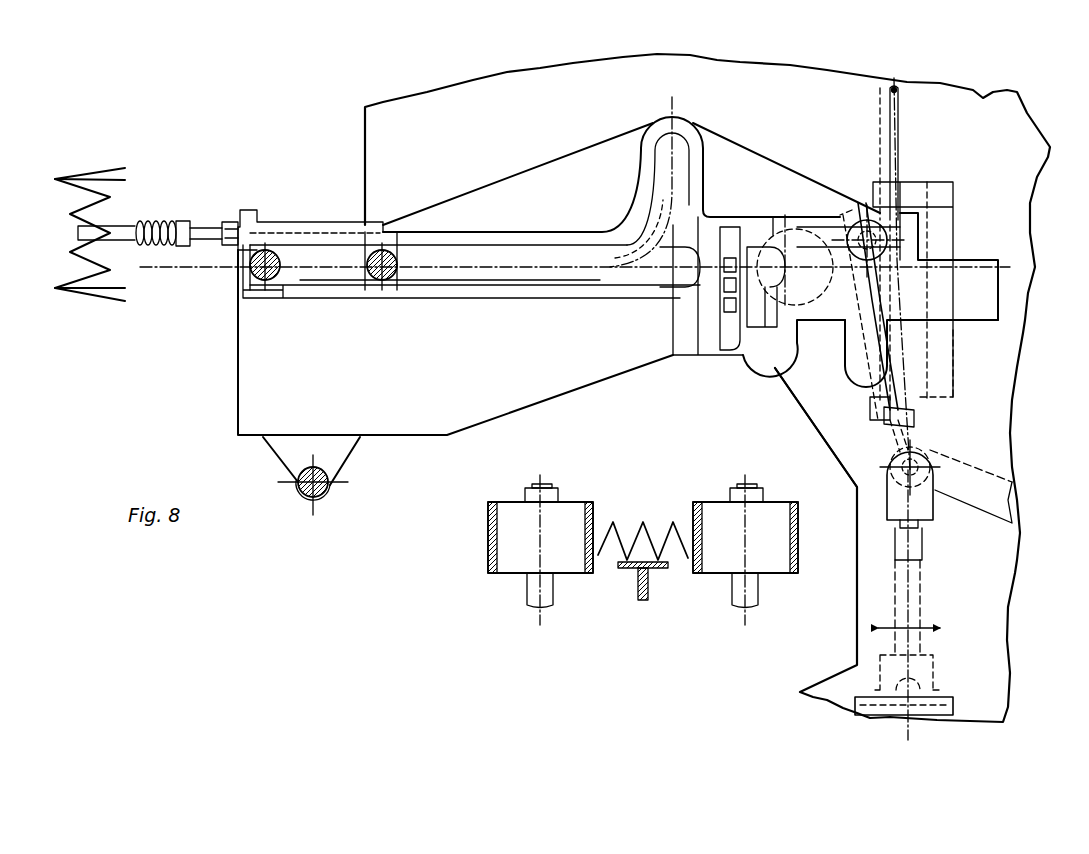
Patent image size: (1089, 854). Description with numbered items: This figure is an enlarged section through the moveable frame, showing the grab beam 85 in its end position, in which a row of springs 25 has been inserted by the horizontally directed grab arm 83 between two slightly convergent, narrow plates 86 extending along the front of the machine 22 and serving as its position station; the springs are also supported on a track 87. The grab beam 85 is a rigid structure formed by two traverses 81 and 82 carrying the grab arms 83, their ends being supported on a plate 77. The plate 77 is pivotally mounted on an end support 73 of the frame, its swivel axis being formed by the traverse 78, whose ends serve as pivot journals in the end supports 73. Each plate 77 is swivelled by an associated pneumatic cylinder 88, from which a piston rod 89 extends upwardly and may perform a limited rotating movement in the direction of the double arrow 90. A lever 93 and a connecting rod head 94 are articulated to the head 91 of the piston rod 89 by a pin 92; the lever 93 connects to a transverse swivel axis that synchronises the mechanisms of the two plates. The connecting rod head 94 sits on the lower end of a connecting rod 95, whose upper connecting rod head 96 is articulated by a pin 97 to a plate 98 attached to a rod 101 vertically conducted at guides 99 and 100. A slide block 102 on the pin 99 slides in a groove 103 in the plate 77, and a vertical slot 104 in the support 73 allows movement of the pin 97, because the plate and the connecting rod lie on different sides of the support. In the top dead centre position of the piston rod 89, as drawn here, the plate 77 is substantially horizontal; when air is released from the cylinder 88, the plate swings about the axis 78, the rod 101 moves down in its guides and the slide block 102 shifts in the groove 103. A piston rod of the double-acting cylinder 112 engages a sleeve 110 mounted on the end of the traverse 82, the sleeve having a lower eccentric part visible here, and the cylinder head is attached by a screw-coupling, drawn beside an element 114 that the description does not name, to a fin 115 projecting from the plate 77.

The machine 22 is at (62, 166).
The narrow plates 86 is at (97, 170).
The grab arms 83 is at (140, 222).
The sleeve 110 is at (240, 274).
The traverse 82 is at (236, 304).
The grab beam 85 is at (329, 263).
The traverse 81 is at (389, 290).
The traverse 78 is at (330, 490).
The plate 77 is at (543, 172).
The end support 73 is at (753, 74).
The groove 103 is at (768, 216).
The slide block 102 is at (822, 217).
The pin 97 is at (860, 205).
The plate 98 is at (869, 196).
The guide 100 is at (903, 190).
The rod 101 is at (893, 145).
The double-acting cylinder 112 is at (982, 264).
The nut 114 is at (731, 306).
The fin 115 is at (718, 347).
The connecting rod head 96 is at (798, 352).
The vertical slot 104 is at (842, 343).
The connecting rod 95 is at (895, 395).
The guide 99 is at (867, 427).
The connecting rod head 94 is at (887, 447).
The pin 92 is at (924, 459).
The lever 93 is at (985, 490).
The head 91 is at (925, 505).
The piston rod 89 is at (918, 581).
The double arrow 90 is at (918, 614).
The pneumatic cylinder 88 is at (938, 708).
The springs 25 is at (620, 530).
The track 87 is at (637, 594).